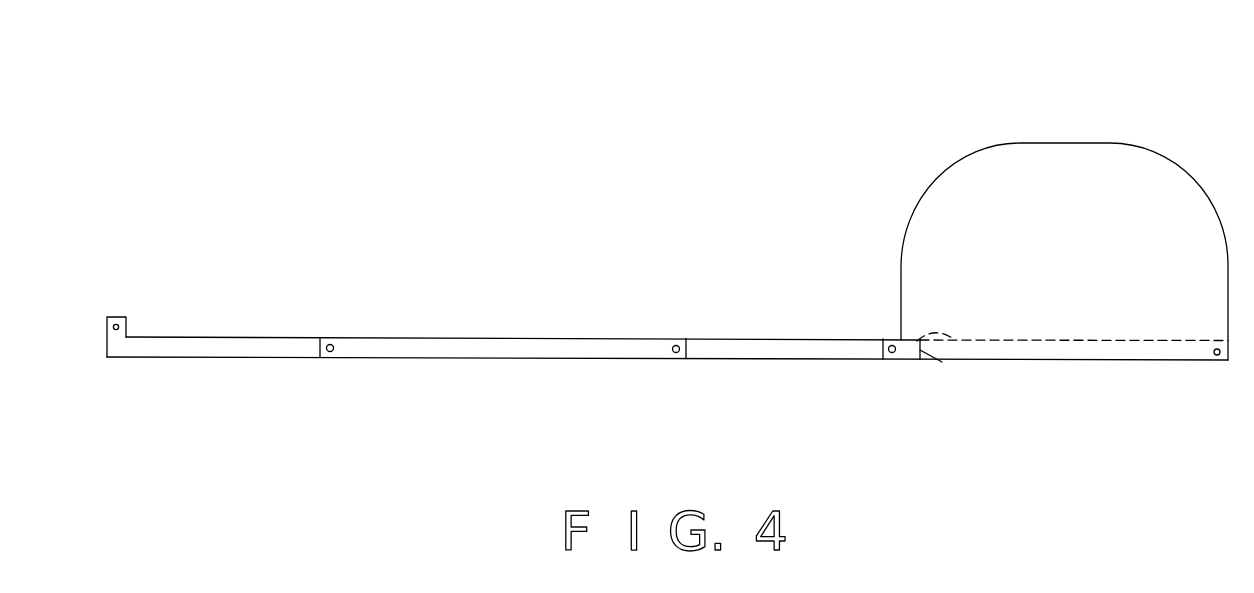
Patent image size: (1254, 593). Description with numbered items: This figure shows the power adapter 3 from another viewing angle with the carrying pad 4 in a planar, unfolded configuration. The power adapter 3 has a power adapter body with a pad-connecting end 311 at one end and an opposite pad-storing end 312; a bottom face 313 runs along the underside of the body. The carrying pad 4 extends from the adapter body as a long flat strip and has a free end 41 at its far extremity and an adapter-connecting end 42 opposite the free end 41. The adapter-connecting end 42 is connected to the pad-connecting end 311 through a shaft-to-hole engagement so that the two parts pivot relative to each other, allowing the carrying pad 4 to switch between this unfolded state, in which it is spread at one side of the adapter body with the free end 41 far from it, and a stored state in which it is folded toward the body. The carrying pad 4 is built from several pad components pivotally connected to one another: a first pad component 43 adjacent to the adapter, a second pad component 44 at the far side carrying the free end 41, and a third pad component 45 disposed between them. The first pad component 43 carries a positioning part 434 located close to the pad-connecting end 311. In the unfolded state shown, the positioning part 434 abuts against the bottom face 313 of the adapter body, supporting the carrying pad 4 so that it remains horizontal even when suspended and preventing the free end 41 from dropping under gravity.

The power adapter 3 is at (1052, 138).
The carrying pad 4 is at (473, 315).
The free end 41 is at (105, 343).
The adapter-connecting end 42 is at (942, 362).
The first pad component 43 is at (774, 360).
The second pad component 44 is at (208, 358).
The third pad component 45 is at (451, 358).
The pad-connecting end 311 is at (893, 361).
The pad-storing end 312 is at (1219, 354).
The bottom face 313 is at (1123, 341).
The positioning part 434 is at (955, 340).